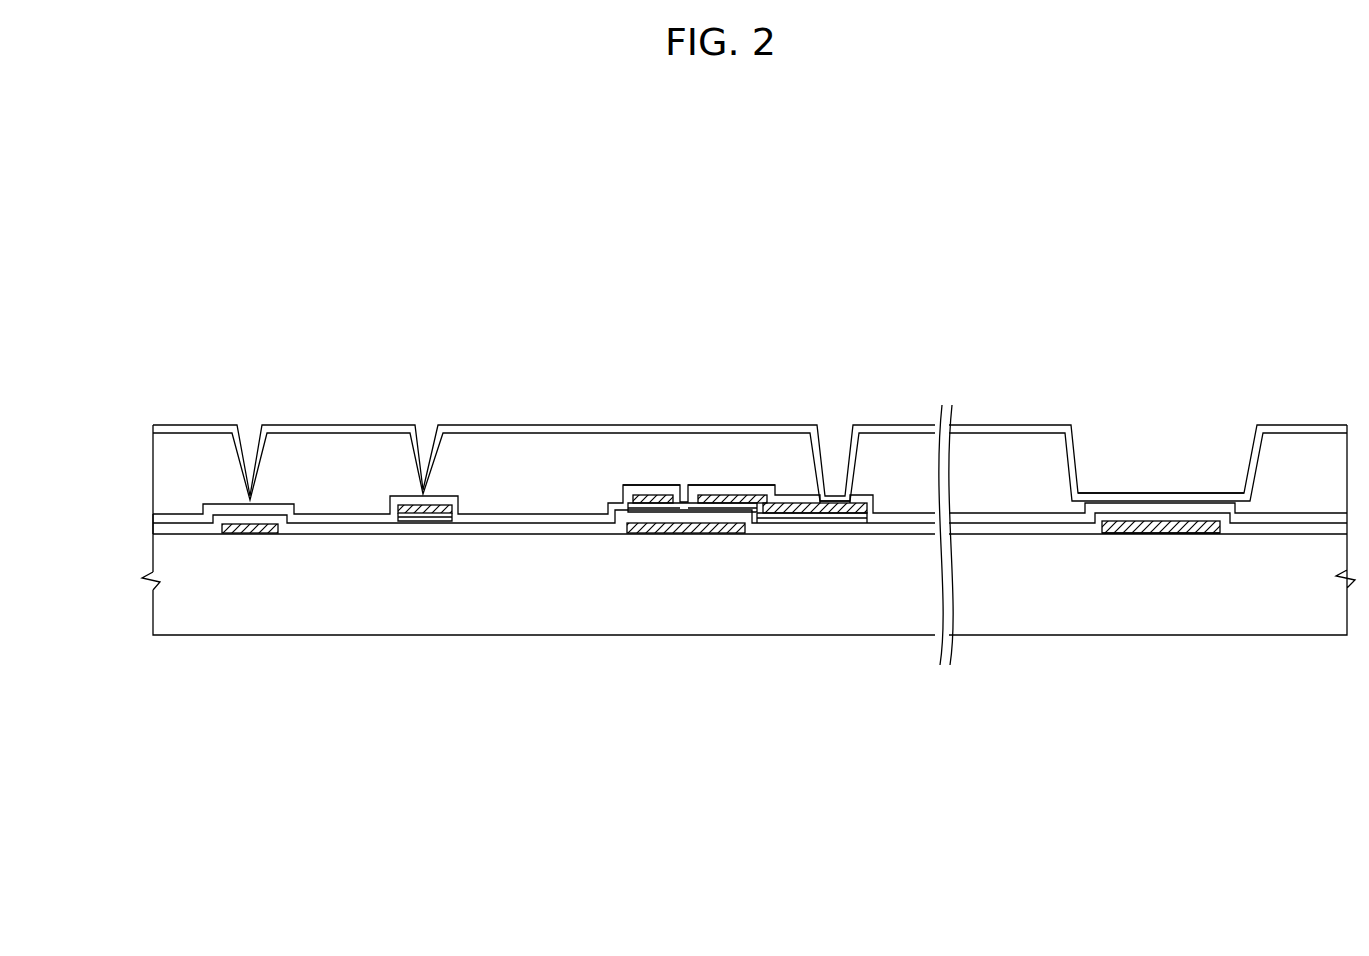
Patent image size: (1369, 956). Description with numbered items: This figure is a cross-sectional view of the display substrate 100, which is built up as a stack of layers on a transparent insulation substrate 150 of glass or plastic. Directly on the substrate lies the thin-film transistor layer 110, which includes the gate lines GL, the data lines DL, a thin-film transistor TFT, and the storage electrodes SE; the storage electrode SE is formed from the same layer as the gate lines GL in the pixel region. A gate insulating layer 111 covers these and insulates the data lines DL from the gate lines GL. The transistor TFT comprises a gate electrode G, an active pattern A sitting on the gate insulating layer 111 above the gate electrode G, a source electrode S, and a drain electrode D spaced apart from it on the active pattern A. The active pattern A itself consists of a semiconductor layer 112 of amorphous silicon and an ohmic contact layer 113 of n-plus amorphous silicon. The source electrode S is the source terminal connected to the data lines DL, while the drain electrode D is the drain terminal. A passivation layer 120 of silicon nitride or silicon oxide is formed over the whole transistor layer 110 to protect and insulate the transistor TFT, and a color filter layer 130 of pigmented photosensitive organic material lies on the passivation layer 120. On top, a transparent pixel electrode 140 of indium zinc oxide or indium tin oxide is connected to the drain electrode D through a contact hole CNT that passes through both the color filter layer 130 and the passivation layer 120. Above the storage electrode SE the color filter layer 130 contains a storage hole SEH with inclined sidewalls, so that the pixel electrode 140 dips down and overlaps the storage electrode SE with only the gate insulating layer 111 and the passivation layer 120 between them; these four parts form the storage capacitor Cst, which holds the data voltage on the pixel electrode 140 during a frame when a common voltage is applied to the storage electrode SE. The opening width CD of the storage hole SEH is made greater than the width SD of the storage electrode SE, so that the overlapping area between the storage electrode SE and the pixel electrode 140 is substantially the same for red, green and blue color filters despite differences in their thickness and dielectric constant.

The display substrate 100 is at (771, 307).
The thin-film transistor layer 110 is at (150, 531).
The gate insulating layer 111 is at (483, 524).
The semiconductor layer 112 is at (780, 522).
The ohmic contact layer 113 is at (838, 516).
The passivation layer 120 is at (552, 515).
The color filter layer 130 is at (1293, 495).
The pixel electrode 140 is at (1002, 434).
The transparent insulation substrate 150 is at (331, 600).
The gate line GL is at (260, 534).
The data line DL is at (420, 514).
The source electrode S is at (652, 504).
The gate electrode G is at (687, 534).
The drain electrode D is at (730, 504).
The storage electrode SE is at (1157, 534).
The storage hole SEH is at (1072, 478).
The thin-film transistor TFT is at (687, 478).
The contact hole CNT is at (835, 432).
The storage capacitor Cst is at (1148, 470).
The opening width CD is at (1257, 367).
The width of storage electrode SD is at (1218, 752).
The active pattern A is at (857, 700).